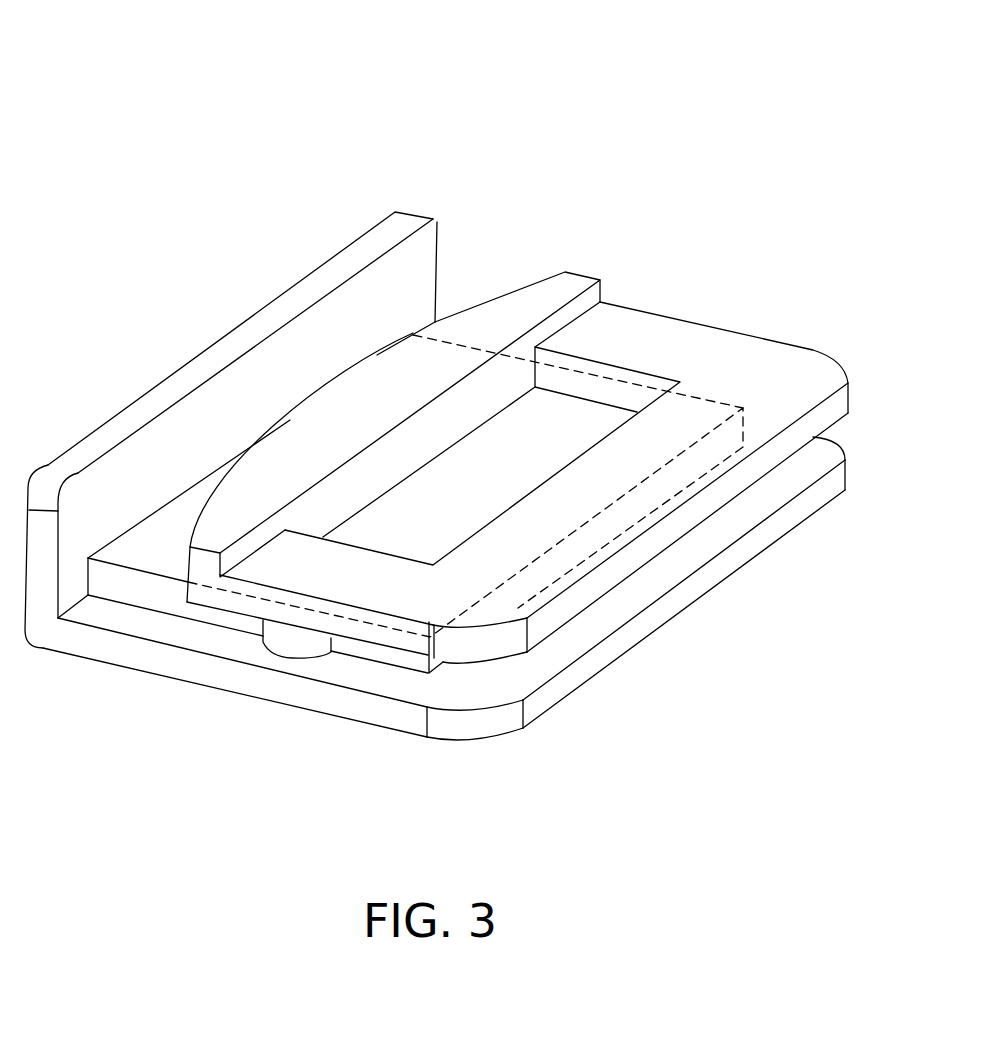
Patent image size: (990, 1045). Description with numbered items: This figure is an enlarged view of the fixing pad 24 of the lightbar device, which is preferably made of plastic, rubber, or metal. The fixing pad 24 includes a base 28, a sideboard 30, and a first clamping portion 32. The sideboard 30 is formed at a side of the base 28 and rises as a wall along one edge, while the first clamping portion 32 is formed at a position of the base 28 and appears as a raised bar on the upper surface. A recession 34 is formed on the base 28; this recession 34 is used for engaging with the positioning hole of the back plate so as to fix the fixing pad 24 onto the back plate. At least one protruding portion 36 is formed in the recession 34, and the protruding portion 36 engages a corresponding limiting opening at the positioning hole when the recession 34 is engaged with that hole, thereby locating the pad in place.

The fixing pad 24 is at (797, 111).
The base 28 is at (706, 587).
The sideboard 30 is at (286, 306).
The first clamping portion 32 is at (513, 305).
The recession 34 is at (846, 437).
The protruding portion 36 is at (291, 641).